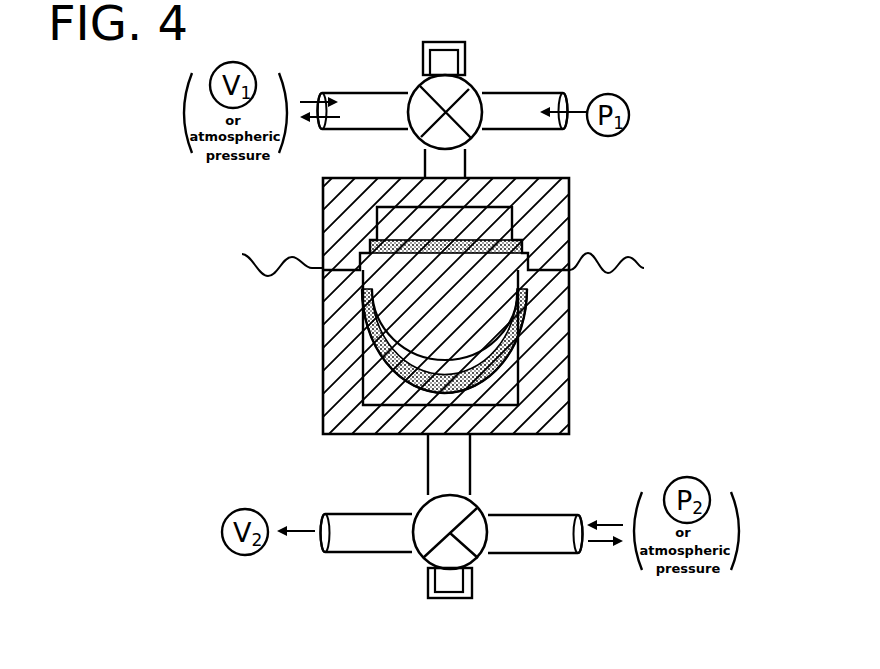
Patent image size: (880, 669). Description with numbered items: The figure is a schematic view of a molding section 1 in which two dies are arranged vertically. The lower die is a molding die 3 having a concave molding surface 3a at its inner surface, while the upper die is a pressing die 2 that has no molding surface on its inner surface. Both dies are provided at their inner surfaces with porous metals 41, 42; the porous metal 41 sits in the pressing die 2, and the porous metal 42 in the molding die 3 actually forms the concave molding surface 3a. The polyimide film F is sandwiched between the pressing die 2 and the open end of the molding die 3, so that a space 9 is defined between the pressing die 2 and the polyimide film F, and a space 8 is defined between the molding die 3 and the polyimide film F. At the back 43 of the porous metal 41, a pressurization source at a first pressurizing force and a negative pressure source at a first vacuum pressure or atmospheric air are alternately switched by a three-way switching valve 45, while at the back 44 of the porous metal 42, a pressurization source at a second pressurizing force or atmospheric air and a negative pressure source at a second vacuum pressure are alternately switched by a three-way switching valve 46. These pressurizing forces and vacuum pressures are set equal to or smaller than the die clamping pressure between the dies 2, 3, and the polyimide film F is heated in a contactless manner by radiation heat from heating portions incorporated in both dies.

The molding section 1 is at (445, 316).
The pressing die 2 is at (445, 289).
The molding die 3 is at (445, 336).
The concave molding surface 3a is at (486, 354).
The space 8 is at (441, 366).
The space 9 is at (473, 300).
The porous metal 41 is at (417, 239).
The porous metal 42 is at (372, 400).
The back of the porous metal 43 is at (385, 227).
The back of the porous metal 44 is at (362, 406).
The three-way switching valve 45 is at (460, 87).
The three-way switching valve 46 is at (427, 548).
The polyimide film F is at (386, 340).